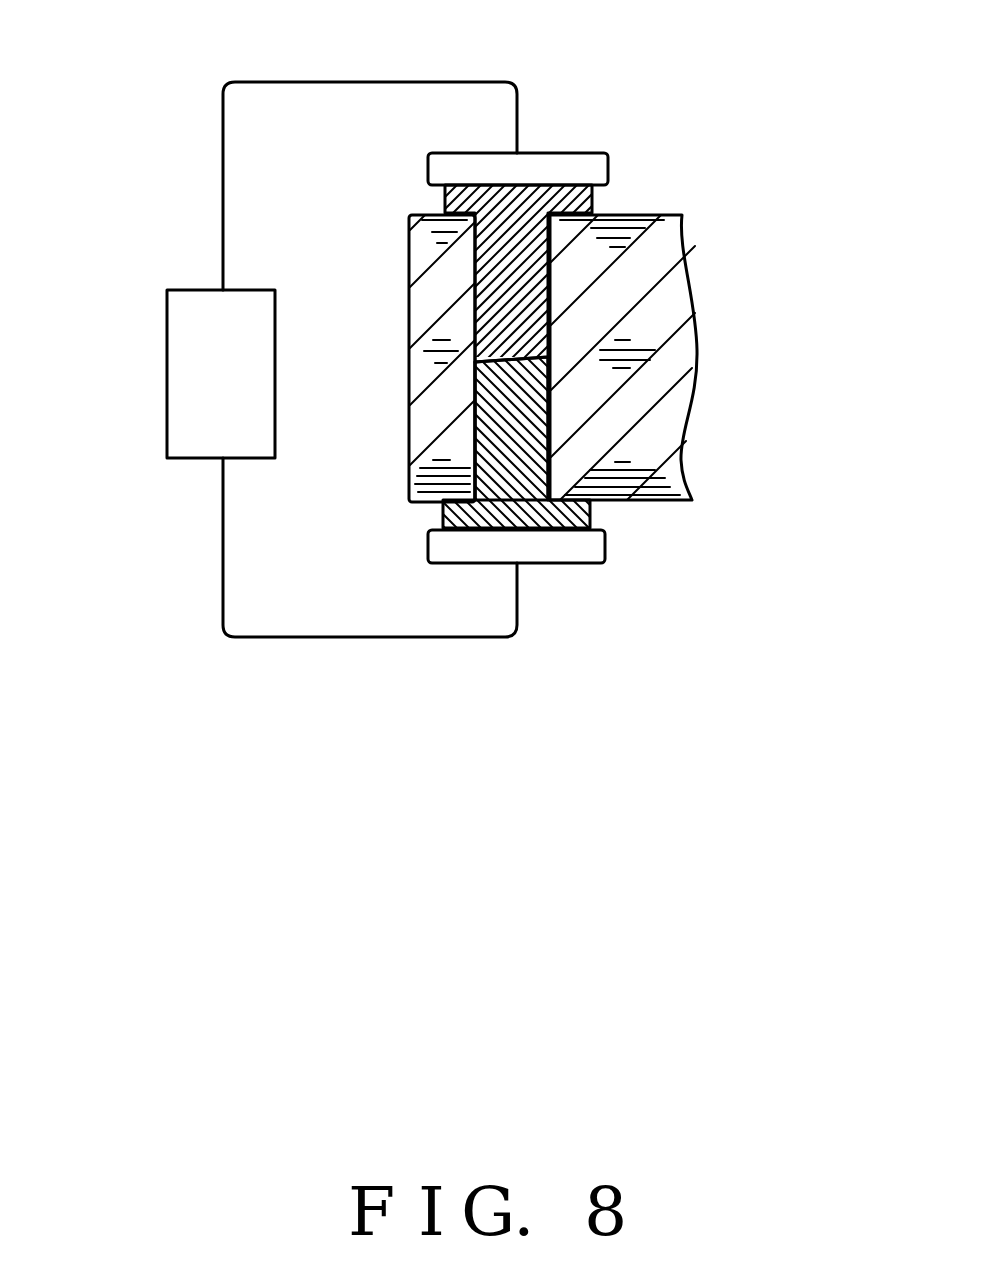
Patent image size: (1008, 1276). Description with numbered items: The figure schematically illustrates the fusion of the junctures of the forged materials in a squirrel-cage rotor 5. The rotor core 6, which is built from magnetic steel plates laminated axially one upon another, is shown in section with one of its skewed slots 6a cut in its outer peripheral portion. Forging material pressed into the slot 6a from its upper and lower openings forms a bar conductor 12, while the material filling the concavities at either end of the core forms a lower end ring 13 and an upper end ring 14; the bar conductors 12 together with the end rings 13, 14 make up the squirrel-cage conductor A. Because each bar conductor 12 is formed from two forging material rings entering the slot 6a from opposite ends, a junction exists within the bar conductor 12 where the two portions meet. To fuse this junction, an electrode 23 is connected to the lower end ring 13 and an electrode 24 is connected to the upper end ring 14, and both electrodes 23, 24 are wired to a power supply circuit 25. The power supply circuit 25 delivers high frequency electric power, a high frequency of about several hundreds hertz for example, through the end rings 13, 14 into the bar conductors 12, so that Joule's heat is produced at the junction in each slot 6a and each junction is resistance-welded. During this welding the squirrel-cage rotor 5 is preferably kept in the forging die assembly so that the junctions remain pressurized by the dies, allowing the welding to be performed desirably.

The squirrel-cage rotor 5 is at (687, 431).
The rotor core 6 is at (409, 350).
The skewed slot 6a is at (541, 278).
The bar conductor 12 is at (533, 403).
The lower end ring 13 is at (557, 530).
The upper end ring 14 is at (567, 210).
The electrode 23 is at (605, 552).
The electrode 24 is at (608, 168).
The power supply circuit 25 is at (167, 376).
The squirrel-cage conductor A is at (472, 540).